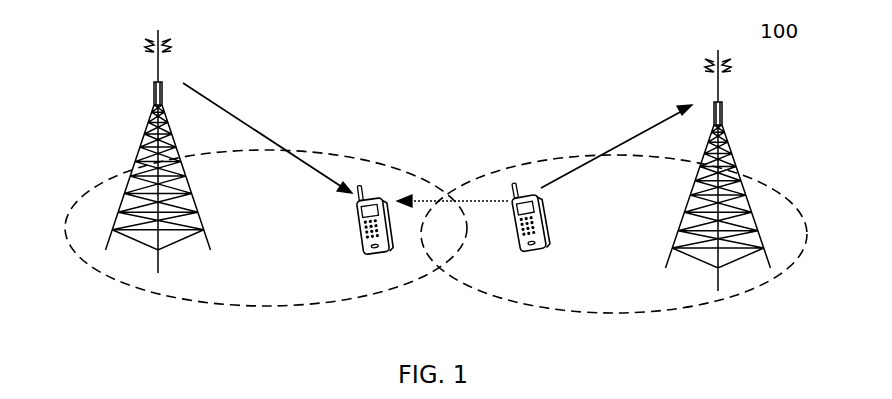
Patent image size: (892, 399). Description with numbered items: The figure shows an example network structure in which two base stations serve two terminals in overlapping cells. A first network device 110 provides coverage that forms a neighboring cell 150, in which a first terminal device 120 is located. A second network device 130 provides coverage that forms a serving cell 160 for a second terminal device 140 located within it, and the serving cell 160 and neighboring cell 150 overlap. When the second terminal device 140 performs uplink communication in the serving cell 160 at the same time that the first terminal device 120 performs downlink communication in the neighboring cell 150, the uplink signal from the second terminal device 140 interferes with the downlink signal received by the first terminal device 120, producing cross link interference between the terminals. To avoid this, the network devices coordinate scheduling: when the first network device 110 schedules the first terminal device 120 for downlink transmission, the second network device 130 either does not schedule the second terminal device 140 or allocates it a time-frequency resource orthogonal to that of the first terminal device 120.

The first network device 110 is at (152, 121).
The first terminal device 120 is at (360, 231).
The second network device 130 is at (726, 126).
The second terminal device 140 is at (548, 217).
The neighboring cell 150 is at (266, 228).
The serving cell 160 is at (614, 234).